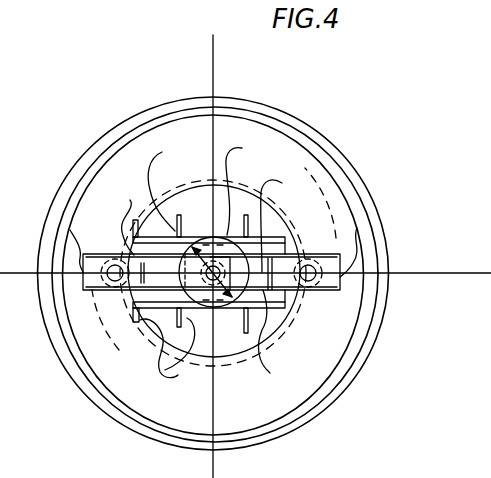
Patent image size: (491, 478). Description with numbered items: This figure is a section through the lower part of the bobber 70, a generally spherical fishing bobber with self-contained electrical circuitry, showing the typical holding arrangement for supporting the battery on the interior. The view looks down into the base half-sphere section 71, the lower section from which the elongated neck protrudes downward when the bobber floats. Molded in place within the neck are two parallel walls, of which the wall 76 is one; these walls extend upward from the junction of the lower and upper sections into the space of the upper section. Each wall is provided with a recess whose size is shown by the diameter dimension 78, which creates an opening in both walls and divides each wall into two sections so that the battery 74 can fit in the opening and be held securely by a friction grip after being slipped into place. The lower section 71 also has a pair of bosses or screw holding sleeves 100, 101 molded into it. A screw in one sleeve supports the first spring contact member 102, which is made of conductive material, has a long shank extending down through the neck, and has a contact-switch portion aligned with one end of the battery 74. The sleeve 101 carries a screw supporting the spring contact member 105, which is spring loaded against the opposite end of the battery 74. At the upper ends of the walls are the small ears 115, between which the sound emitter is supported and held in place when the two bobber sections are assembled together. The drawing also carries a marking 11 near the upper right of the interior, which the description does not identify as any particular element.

The bobber 70 is at (299, 110).
The base half-sphere section 71 is at (322, 404).
The screw holding sleeve 100 is at (368, 204).
The rotor 11 is at (270, 240).
The screw holding sleeve 101 is at (106, 338).
The diameter dimension 78 is at (255, 296).
The spring contact member 105 is at (130, 200).
The ears 115 is at (177, 270).
The battery 74 is at (246, 186).
The first spring contact member 102 is at (290, 223).
The wall 76 is at (280, 338).